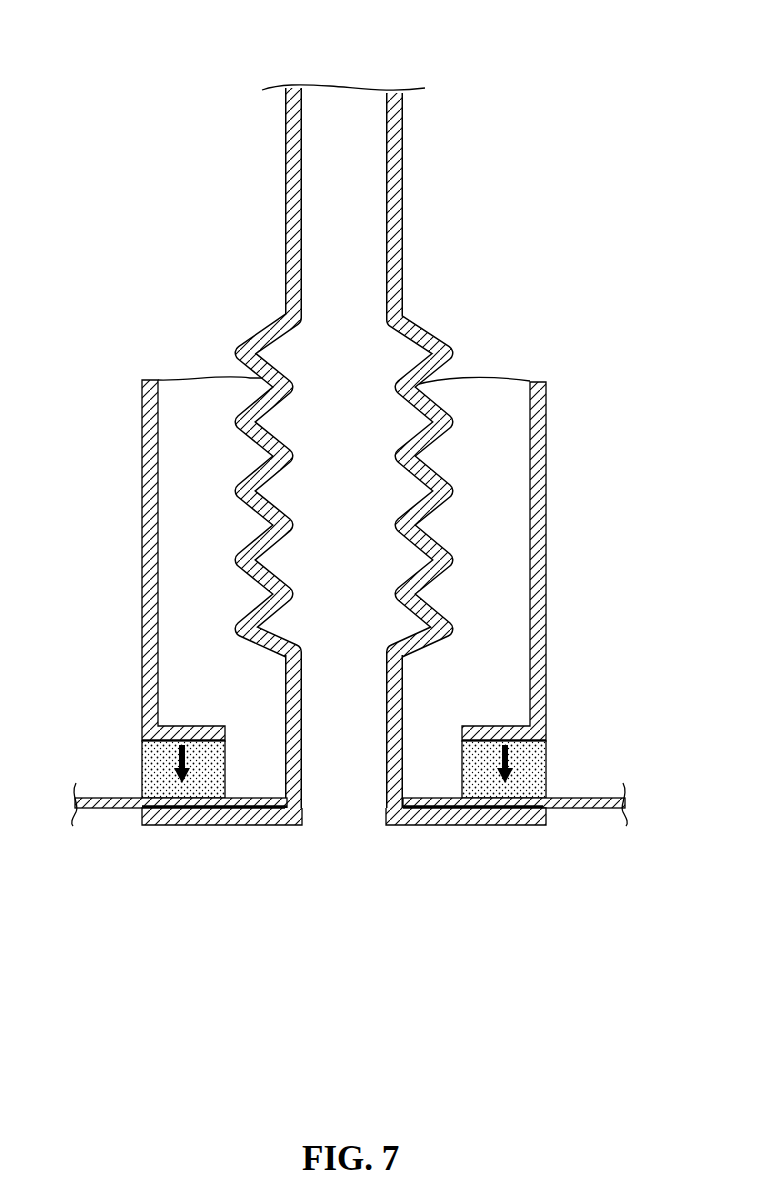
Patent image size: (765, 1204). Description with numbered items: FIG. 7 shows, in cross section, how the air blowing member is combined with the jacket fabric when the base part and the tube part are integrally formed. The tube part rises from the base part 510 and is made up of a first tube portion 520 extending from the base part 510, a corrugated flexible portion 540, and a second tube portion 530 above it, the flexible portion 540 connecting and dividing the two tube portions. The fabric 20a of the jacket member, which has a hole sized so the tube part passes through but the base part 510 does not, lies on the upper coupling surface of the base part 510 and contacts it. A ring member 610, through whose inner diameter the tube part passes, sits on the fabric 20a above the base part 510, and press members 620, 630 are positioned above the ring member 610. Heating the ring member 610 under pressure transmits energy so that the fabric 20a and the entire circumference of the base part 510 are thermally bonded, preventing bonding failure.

The second tube portion 530 is at (397, 198).
The flexible portion 540 is at (425, 336).
The first tube portion 520 is at (398, 690).
The press member 620 is at (142, 523).
The press member 630 is at (546, 571).
The ring member 610 is at (150, 758).
The base part 510 is at (255, 815).
The fabric 20a is at (590, 810).